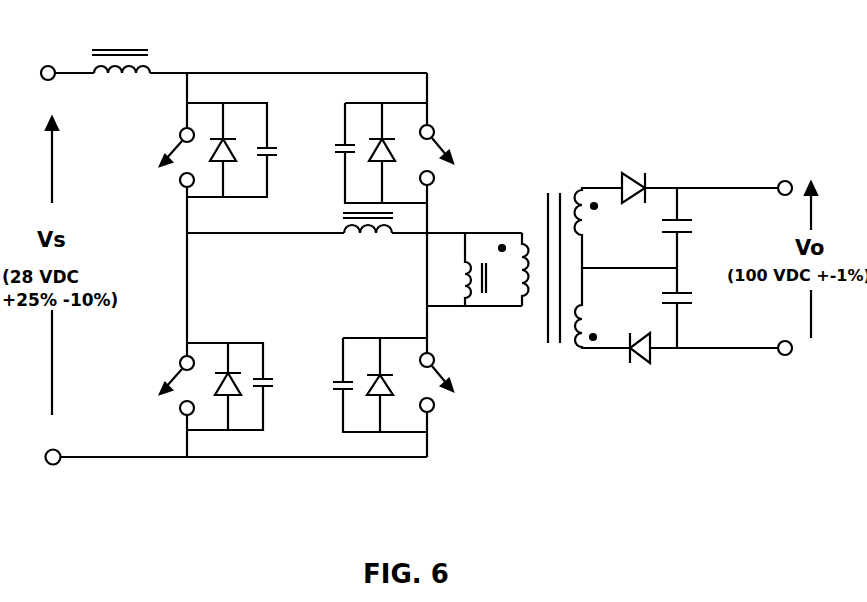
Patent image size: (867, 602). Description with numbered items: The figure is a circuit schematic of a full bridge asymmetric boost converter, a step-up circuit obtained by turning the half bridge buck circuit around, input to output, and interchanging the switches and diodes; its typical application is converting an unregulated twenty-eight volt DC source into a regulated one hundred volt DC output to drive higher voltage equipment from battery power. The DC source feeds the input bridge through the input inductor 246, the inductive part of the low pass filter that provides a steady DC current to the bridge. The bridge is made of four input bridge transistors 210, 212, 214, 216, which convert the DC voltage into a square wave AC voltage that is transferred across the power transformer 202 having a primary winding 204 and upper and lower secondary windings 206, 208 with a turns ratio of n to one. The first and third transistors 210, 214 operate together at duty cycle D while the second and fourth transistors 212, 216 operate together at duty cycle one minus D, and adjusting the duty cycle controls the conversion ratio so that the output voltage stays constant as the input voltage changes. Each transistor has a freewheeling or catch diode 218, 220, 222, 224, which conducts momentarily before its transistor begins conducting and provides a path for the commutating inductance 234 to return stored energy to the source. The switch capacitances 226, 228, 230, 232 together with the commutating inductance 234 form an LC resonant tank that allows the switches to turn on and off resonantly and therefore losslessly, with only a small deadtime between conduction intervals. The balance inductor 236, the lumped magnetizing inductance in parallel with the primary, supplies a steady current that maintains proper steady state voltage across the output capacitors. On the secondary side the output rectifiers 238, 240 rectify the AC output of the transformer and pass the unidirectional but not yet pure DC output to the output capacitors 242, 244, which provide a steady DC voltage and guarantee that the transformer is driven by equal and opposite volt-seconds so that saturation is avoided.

The power transformer 202 is at (570, 259).
The primary winding 204 is at (515, 258).
The upper secondary winding 206 is at (612, 228).
The lower secondary winding 208 is at (613, 308).
The input bridge transistor 210 is at (152, 160).
The input bridge transistor 212 is at (463, 158).
The input bridge transistor 214 is at (464, 387).
The input bridge transistor 216 is at (145, 390).
The freewheeling or catch diode 218 is at (265, 220).
The freewheeling or catch diode 220 is at (372, 144).
The freewheeling or catch diode 222 is at (363, 386).
The freewheeling or catch diode 224 is at (253, 399).
The switch capacitance 226 is at (260, 141).
The switch capacitance 228 is at (295, 157).
The switch capacitance 230 is at (326, 353).
The switch capacitance 232 is at (286, 386).
The commutating inductance 234 is at (346, 244).
The balance inductor 236 is at (461, 284).
The output rectifier 238 is at (689, 166).
The output rectifier 240 is at (691, 378).
The output capacitor 242 is at (705, 228).
The output capacitor 244 is at (704, 308).
The input inductor 246 is at (112, 68).